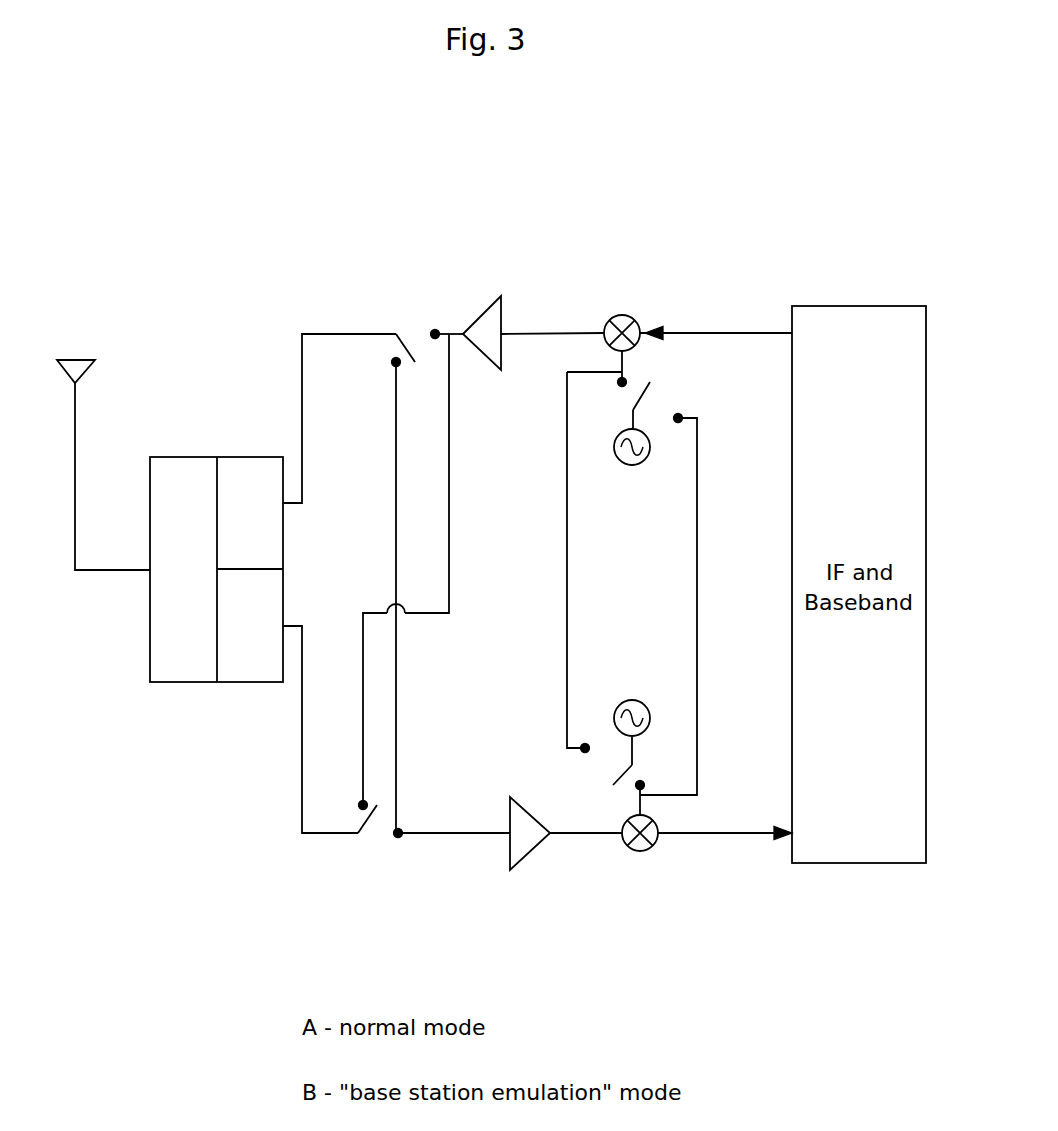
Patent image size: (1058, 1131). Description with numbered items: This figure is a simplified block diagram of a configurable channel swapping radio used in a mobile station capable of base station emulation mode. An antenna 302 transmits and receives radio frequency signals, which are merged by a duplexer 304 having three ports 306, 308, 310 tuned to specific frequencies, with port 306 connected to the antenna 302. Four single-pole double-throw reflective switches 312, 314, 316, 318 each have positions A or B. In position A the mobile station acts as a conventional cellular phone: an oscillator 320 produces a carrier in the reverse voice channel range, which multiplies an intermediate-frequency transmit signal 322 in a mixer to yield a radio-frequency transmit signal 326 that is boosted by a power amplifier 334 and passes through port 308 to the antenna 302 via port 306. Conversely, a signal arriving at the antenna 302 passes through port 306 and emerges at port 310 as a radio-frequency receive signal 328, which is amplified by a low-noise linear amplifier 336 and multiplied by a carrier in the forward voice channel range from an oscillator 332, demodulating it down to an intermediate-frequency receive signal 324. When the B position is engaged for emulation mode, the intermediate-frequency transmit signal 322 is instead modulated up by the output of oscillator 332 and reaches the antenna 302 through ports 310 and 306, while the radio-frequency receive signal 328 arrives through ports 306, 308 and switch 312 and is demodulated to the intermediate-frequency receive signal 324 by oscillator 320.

The antenna 302 is at (115, 420).
The duplexer 304 is at (216, 600).
The port 306 is at (191, 569).
The port 308 is at (306, 451).
The port 310 is at (292, 729).
The single-pole double-throw reflective switch 312 is at (406, 346).
The single-pole double-throw reflective switch 314 is at (642, 401).
The single-pole double-throw reflective switch 316 is at (368, 836).
The single-pole double-throw reflective switch 318 is at (622, 773).
The oscillator 320 is at (634, 476).
The intermediate-frequency transmit signal 322 is at (690, 330).
The intermediate-frequency receive signal 324 is at (750, 836).
The radio-frequency transmit signal 326 is at (578, 328).
The radio-frequency receive signal 328 is at (497, 836).
The oscillator 332 is at (634, 702).
The power amplifier 334 is at (490, 328).
The low-noise linear amplifier 336 is at (530, 835).